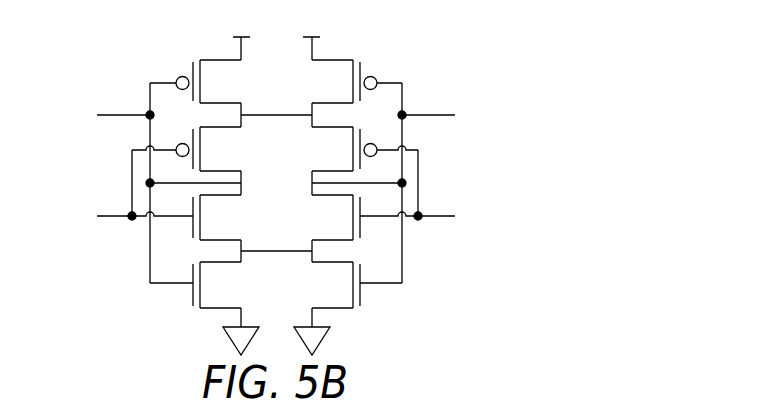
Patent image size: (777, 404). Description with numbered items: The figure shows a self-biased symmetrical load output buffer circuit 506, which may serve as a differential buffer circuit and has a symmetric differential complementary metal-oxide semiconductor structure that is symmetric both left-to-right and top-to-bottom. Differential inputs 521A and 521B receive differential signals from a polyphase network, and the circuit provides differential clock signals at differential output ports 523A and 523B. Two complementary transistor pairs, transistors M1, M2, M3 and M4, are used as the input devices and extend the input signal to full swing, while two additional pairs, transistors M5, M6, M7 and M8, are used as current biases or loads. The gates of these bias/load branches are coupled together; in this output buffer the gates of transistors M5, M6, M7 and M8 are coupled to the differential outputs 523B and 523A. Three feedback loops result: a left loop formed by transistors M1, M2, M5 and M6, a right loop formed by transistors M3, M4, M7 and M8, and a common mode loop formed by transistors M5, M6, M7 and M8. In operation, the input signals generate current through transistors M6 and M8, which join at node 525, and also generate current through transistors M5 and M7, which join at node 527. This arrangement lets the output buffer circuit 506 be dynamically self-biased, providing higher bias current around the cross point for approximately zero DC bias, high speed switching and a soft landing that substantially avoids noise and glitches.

The self-biased symmetrical load output buffer circuit 506 is at (419, 50).
The differential input 521A is at (113, 216).
The differential input 521B is at (440, 216).
The differential output port 523A is at (440, 115).
The differential output port 523B is at (113, 115).
The node 525 is at (276, 113).
The node 527 is at (277, 249).
The transistor M1 is at (217, 217).
The transistor M2 is at (186, 149).
The transistor M3 is at (365, 149).
The transistor M4 is at (336, 217).
The transistor M5 is at (195, 285).
The transistor M6 is at (195, 81).
The transistor M7 is at (357, 285).
The transistor M8 is at (357, 81).